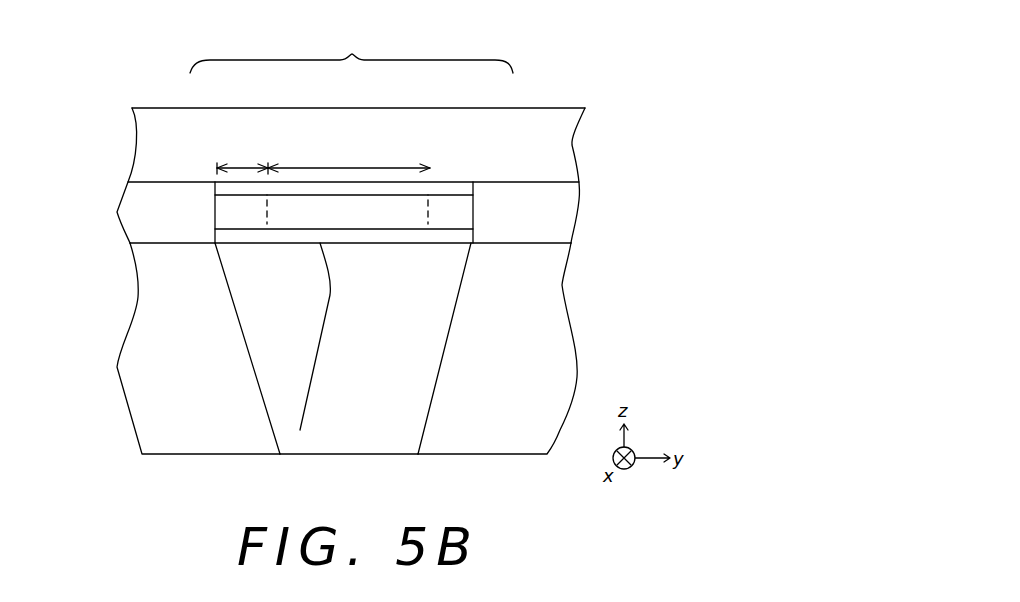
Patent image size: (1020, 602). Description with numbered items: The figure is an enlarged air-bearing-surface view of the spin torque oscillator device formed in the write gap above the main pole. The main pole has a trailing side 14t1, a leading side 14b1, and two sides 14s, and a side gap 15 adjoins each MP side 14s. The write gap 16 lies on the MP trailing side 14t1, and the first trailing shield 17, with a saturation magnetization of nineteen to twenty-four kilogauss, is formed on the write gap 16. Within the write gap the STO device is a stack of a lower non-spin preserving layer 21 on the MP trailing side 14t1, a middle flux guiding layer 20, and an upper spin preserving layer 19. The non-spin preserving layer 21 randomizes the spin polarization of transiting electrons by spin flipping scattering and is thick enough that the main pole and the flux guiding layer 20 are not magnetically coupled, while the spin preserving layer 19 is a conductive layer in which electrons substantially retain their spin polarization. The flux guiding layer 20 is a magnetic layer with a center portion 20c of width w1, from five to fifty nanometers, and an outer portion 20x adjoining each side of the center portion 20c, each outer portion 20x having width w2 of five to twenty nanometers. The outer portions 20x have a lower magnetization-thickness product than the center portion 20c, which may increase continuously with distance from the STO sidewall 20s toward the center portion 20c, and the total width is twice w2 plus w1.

The MP side 14s is at (255, 373).
The MP trailing side 14t1 is at (300, 430).
The MP leading side 14b1 is at (382, 454).
The side gap 15 is at (143, 342).
The write gap 16 is at (567, 199).
The first trailing shield 17 is at (556, 133).
The upper spin preserving layer 19 is at (473, 191).
The flux guiding layer 20 is at (351, 50).
The FGL outer portion 20x is at (221, 213).
The FGL center portion 20c is at (410, 210).
The STO sidewall 20s is at (215, 223).
The lower non-spin preserving layer 21 is at (462, 236).
The width of FGL center portion w1 is at (349, 157).
The width of FGL outer portion w2 is at (242, 157).